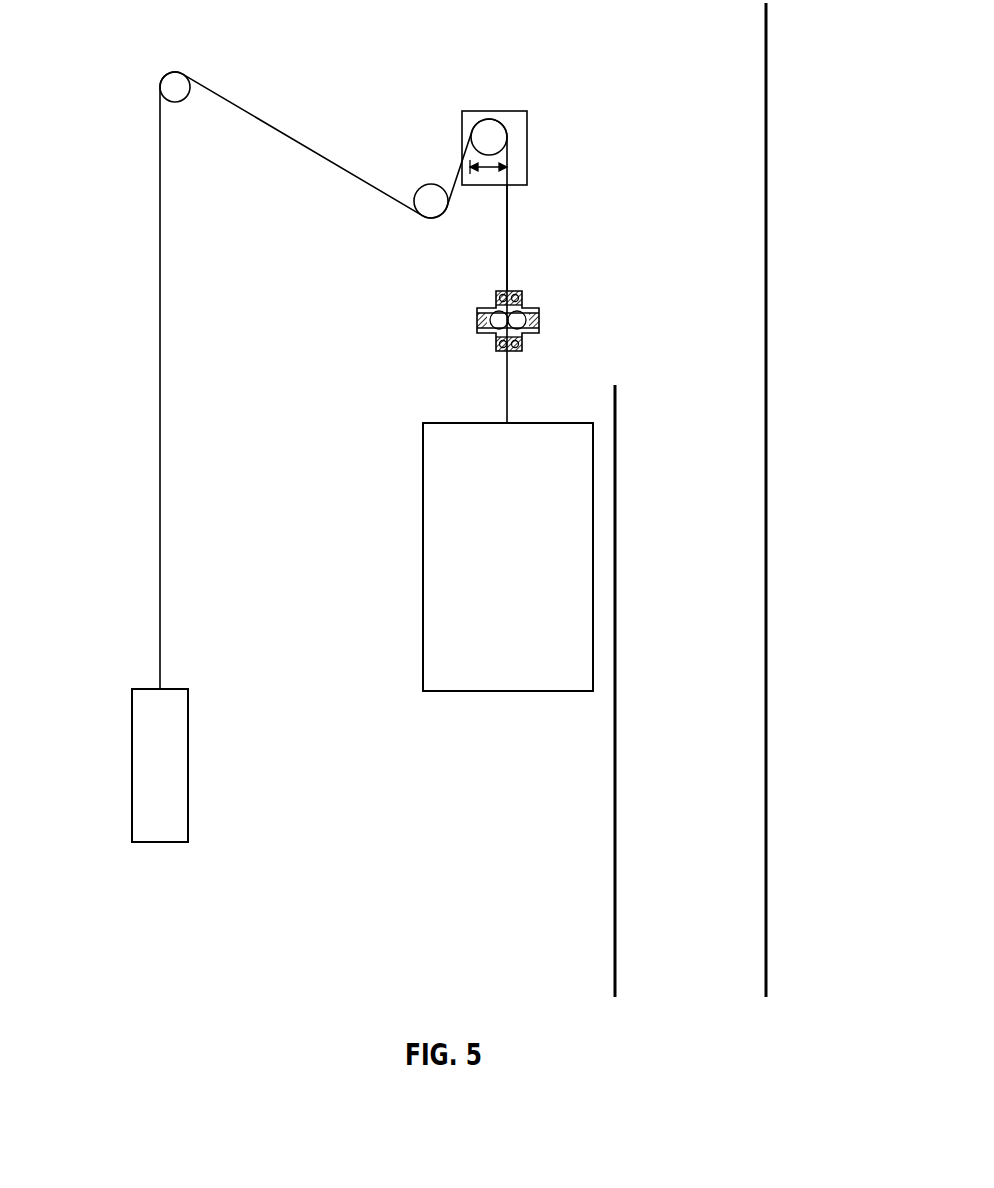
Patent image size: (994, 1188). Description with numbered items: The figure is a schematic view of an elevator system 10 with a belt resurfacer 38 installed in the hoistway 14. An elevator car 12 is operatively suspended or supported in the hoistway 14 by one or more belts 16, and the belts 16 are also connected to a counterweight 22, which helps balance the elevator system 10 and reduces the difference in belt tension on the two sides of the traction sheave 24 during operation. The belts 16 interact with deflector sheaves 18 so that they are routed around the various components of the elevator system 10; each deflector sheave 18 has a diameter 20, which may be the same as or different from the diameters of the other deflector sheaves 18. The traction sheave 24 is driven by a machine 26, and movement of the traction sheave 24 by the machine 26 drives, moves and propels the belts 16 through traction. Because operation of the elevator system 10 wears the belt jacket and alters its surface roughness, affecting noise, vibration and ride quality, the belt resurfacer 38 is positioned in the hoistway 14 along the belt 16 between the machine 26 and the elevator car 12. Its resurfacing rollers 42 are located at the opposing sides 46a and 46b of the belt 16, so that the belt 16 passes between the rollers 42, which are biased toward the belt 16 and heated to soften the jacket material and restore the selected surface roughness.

The elevator system 10 is at (630, 73).
The elevator car 12 is at (495, 569).
The hoistway 14 is at (617, 598).
The belt 16 is at (323, 159).
The deflector sheave 18 is at (165, 76).
The diameter 20 is at (489, 172).
The counterweight 22 is at (148, 776).
The traction sheave 24 is at (497, 120).
The machine 26 is at (477, 111).
The belt resurfacer 38 is at (477, 312).
The resurfacing rollers 42 is at (521, 305).
The first side of the belt 46a is at (507, 245).
The second side of the belt 46b is at (508, 237).